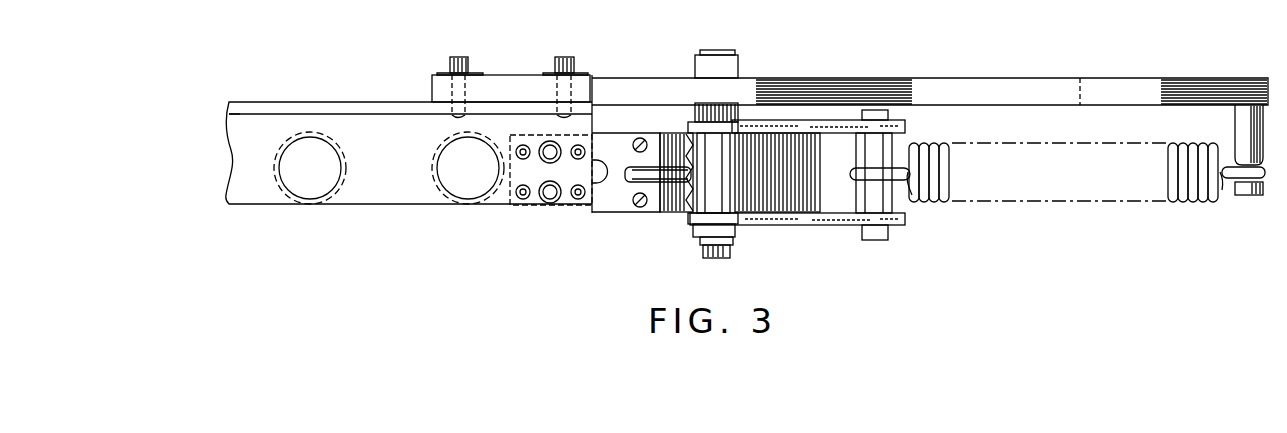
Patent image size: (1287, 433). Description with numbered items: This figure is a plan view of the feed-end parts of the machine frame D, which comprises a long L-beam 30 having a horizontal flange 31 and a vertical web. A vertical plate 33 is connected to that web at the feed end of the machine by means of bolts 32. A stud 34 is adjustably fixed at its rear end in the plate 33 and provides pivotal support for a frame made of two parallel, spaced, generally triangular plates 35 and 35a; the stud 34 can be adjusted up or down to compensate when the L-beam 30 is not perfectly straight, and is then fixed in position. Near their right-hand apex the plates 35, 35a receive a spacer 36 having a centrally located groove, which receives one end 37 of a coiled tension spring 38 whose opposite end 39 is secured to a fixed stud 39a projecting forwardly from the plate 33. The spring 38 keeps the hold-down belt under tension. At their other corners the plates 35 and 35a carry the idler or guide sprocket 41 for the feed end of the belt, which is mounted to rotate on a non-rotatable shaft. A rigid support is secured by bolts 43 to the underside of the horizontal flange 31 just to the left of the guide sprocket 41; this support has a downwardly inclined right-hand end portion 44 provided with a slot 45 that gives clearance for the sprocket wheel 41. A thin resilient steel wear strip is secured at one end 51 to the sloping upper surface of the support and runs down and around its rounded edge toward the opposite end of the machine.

The L-beam 30 is at (336, 108).
The frame D is at (382, 96).
The horizontal flange 31 is at (257, 185).
The bolts 32 is at (562, 60).
The end of wear strip 51 is at (342, 186).
The bolts 43 is at (537, 198).
The downwardly inclined right-hand end portion 44 is at (601, 195).
The slot 45 is at (600, 165).
The idler or guide sprocket 41 is at (651, 177).
The stud 34 is at (721, 52).
The plate 35 is at (833, 122).
The plate 35a is at (843, 222).
The spacer 36 is at (884, 150).
The end of spring 37 is at (897, 203).
The vertical plate 33 is at (1025, 92).
The coiled tension spring 38 is at (935, 187).
The opposite end of spring 39 is at (1236, 180).
The fixed stud 39a is at (1250, 197).